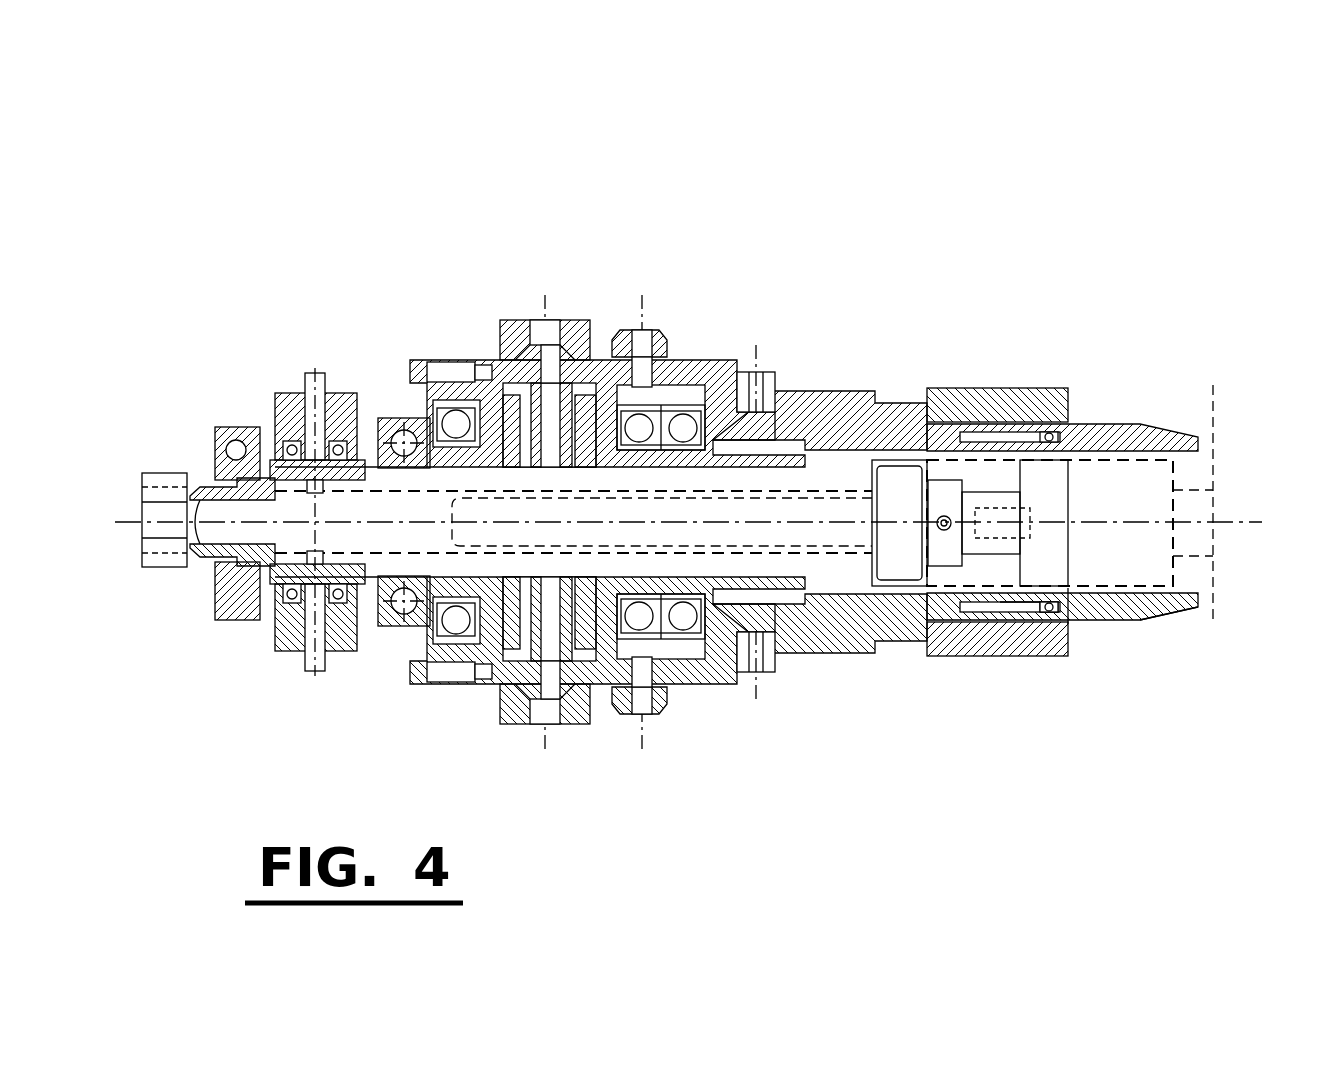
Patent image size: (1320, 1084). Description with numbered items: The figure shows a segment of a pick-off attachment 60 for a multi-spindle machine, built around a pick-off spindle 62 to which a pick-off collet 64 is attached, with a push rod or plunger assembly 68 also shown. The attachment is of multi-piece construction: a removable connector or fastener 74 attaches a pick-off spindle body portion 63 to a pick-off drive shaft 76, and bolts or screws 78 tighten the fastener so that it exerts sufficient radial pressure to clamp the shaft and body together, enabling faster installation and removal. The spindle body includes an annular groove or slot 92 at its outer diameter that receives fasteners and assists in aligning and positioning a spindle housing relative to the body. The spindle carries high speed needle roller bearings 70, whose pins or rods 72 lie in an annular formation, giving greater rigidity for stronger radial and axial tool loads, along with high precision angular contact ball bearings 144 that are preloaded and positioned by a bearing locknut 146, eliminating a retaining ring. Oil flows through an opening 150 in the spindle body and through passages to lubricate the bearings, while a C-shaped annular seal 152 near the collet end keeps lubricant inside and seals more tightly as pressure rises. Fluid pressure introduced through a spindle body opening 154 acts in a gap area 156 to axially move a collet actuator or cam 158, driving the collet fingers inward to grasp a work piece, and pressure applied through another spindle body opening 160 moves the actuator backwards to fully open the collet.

The pick-off attachment 60 is at (862, 200).
The pick-off spindle 62 is at (985, 372).
The pick-off spindle body portion 63 is at (278, 557).
The pick-off collet 64 is at (1197, 447).
The push rod or plunger assembly 68 is at (1062, 565).
The high speed needle roller bearings 70 is at (1030, 606).
The pins or rods 72 is at (1015, 612).
The removable connector or fastener 74 is at (231, 642).
The pick-off drive shaft 76 is at (208, 488).
The bolts or screws 78 is at (237, 448).
The annular groove or slot 92 is at (918, 654).
The angular contact ball bearings 144 is at (685, 632).
The bearing locknut 146 is at (640, 627).
The opening 150 is at (642, 330).
The C-shaped annular seal 152 is at (1070, 608).
The spindle body opening 154 is at (552, 322).
The gap area 156 is at (512, 397).
The collet actuator or cam 158 is at (1192, 612).
The spindle body opening 160 is at (758, 372).